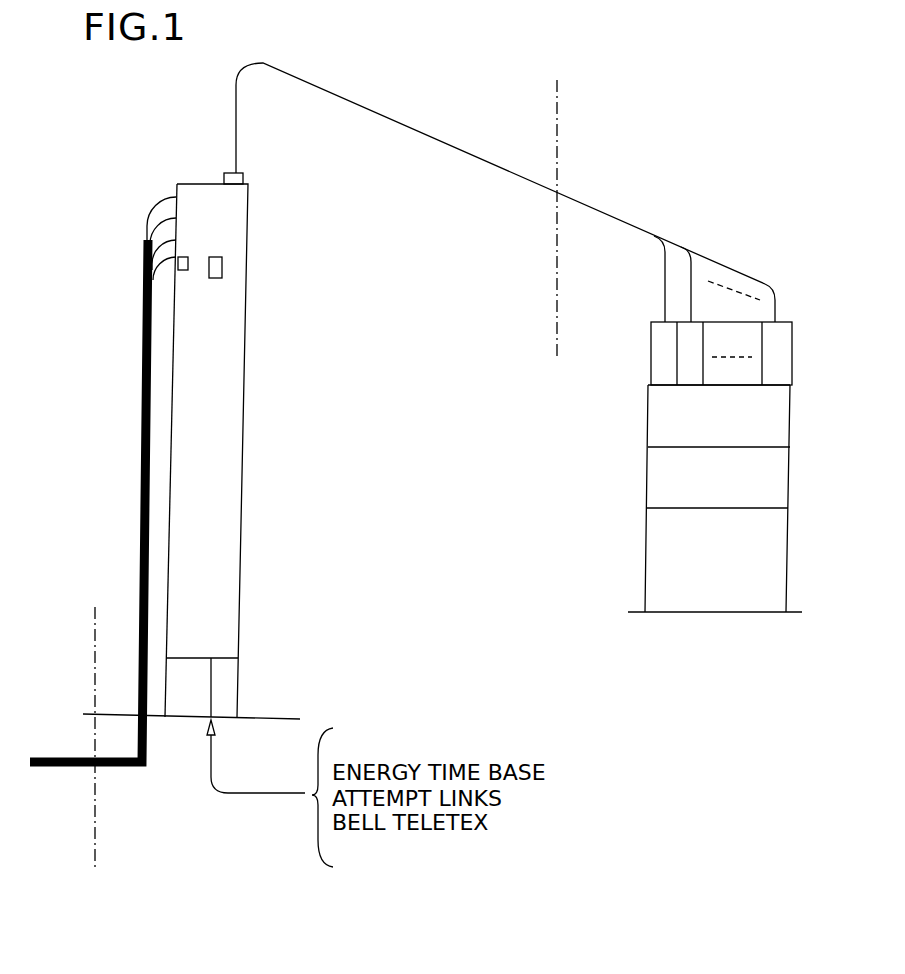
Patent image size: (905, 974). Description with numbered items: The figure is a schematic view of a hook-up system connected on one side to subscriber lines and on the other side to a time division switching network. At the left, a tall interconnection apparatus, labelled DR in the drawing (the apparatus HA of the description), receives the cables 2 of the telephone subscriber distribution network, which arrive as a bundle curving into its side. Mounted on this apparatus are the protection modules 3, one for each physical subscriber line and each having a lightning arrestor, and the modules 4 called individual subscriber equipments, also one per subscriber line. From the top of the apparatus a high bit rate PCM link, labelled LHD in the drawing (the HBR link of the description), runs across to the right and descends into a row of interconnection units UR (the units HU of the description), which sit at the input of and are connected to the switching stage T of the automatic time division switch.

The cables 2 is at (137, 555).
The protection modules 3 is at (183, 270).
The individual subscriber equipments 4 is at (215, 257).
The distributor / concentrator HA DR is at (237, 368).
The link HBRL to exchange LHD is at (378, 108).
The switching stage T is at (715, 498).
The connection units of exchange UR is at (721, 353).